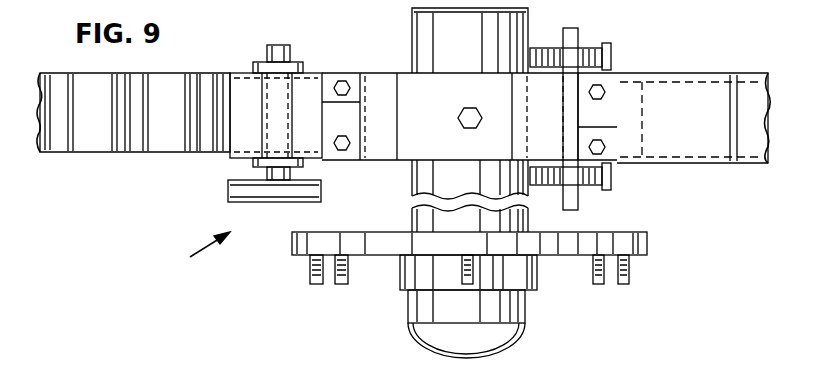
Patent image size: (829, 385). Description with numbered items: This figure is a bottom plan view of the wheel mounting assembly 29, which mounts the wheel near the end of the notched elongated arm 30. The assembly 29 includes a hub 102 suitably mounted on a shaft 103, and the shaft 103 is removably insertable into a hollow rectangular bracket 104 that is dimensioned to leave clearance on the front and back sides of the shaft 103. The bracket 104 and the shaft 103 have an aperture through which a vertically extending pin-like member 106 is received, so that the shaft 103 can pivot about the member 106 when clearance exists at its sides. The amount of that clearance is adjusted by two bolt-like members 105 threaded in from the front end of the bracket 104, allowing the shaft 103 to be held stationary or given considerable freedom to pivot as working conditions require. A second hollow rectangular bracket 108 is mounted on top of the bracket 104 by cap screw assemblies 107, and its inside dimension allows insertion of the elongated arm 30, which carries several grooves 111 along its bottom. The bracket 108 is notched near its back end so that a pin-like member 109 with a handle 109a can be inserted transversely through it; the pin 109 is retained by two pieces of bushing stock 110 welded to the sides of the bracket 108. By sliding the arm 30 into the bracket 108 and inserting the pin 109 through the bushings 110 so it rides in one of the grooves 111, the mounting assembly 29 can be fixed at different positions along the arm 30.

The mounting assembly 29 is at (192, 251).
The notched elongated arm 30 is at (90, 143).
The hub 102 is at (647, 245).
The shaft 103 is at (520, 26).
The hollow rectangular bracket 104 is at (578, 200).
The bolt-like members 105 is at (609, 46).
The pin-like member 106 is at (463, 111).
The cap screw assemblies 107 is at (346, 80).
The hollow rectangular bracket 108 is at (238, 72).
The pin-like member 109 is at (275, 127).
The handle 109a is at (321, 192).
The bushing stock 110 is at (302, 64).
The grooves 111 is at (62, 85).